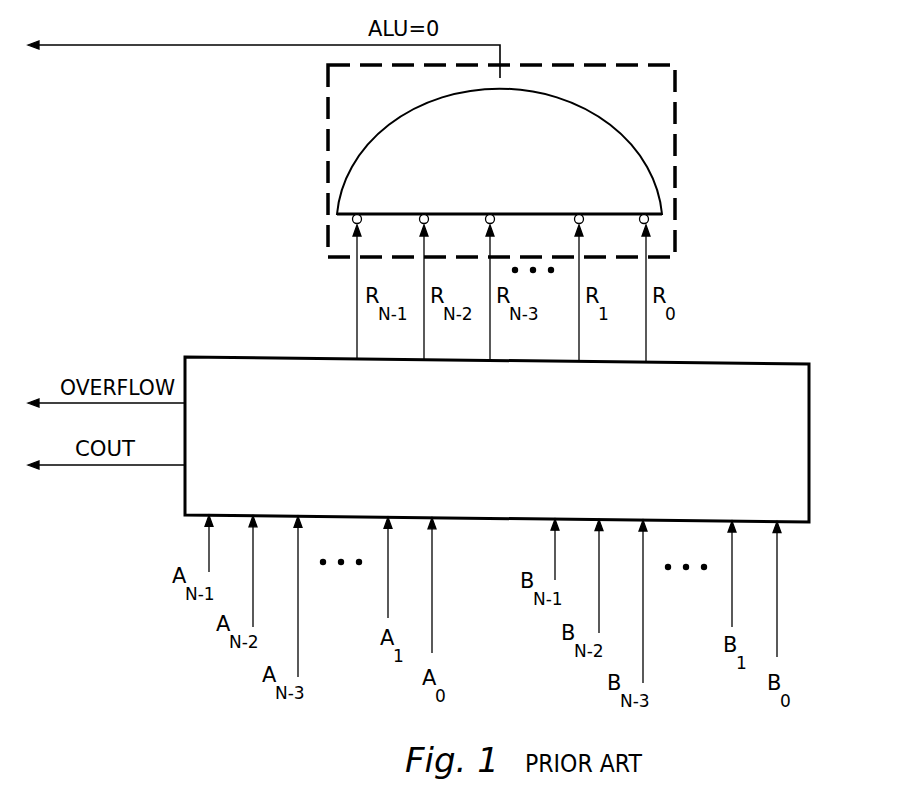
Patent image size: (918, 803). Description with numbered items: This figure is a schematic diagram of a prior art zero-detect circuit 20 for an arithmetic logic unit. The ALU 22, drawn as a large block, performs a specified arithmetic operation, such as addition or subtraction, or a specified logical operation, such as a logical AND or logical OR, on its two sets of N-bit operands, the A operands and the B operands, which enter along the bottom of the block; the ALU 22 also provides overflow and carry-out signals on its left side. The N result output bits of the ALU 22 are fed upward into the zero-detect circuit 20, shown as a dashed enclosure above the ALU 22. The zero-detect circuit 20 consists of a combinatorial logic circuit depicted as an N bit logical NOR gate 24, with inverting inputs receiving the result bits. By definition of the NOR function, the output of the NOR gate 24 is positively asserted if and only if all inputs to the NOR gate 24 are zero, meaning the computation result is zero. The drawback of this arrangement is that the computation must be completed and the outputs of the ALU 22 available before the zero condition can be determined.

The ALU=0 circuit 20 is at (676, 147).
The ALU 22 is at (714, 470).
The NOR gate 24 is at (512, 167).